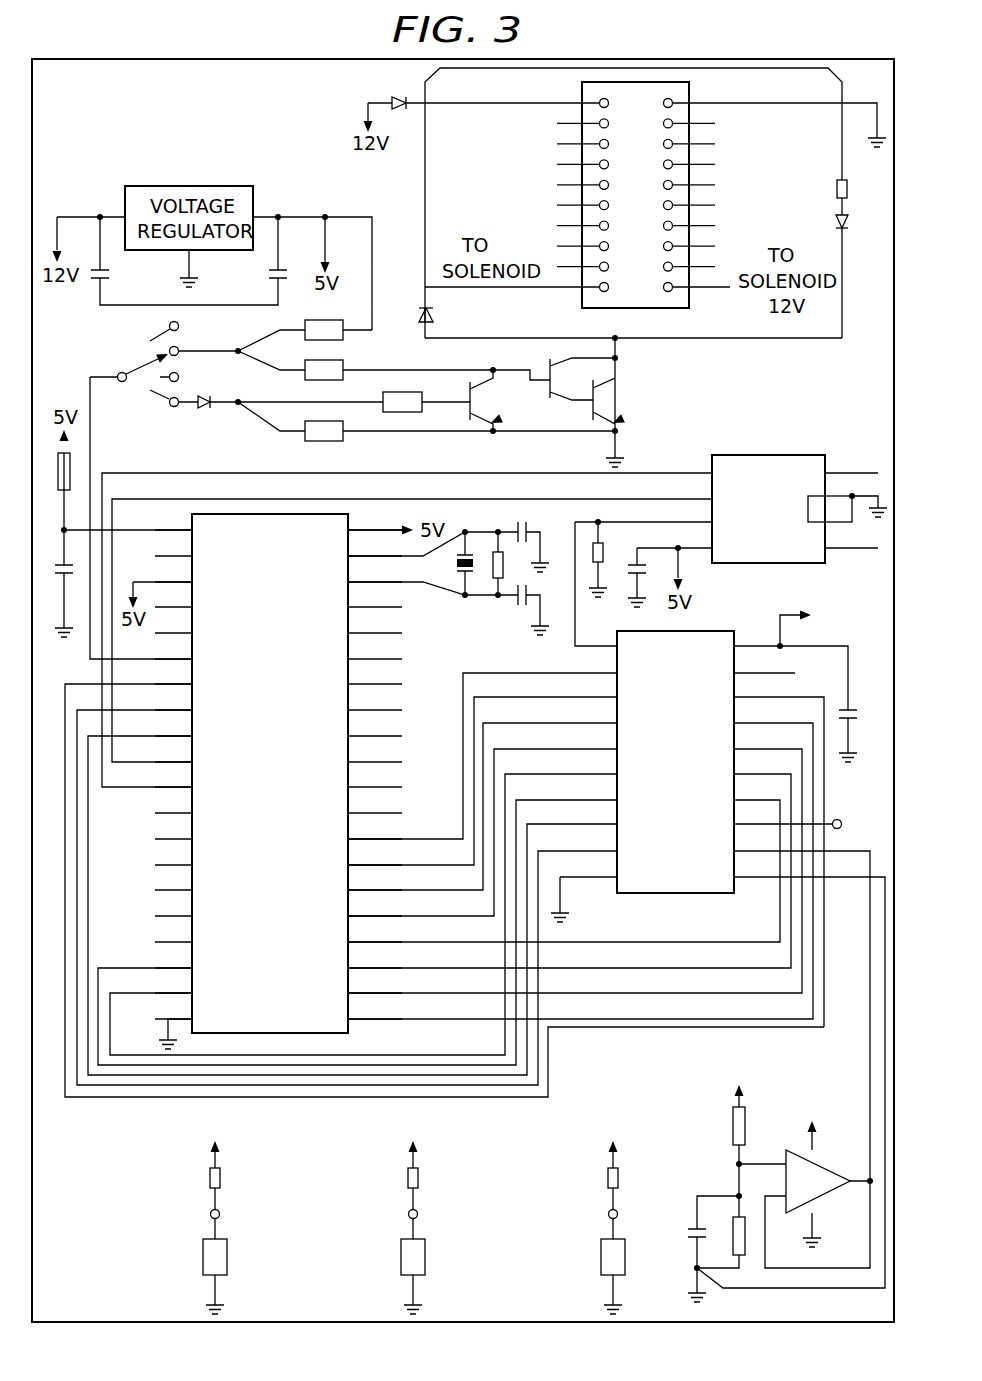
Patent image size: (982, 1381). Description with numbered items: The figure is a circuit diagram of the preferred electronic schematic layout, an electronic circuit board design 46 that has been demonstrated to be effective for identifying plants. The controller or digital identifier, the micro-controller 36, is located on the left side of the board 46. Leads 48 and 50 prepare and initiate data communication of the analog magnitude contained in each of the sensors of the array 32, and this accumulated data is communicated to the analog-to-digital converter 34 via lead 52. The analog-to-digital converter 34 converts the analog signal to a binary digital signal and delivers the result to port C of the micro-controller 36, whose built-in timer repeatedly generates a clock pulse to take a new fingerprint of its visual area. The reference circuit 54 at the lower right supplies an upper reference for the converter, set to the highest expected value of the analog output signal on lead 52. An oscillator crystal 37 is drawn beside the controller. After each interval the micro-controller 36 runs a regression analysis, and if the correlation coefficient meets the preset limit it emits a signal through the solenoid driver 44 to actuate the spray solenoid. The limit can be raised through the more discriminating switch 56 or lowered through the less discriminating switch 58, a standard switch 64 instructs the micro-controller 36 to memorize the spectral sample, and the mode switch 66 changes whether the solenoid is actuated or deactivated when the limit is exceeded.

The electronic circuit board design 46 is at (224, 51).
The sensor array 32 is at (582, 299).
The mode switch 66 is at (113, 350).
The lead 50 is at (135, 498).
The lead 48 is at (170, 474).
The solenoid driver 44 is at (640, 398).
The micro-controller 36 is at (352, 1030).
The oscillator crystal 37 is at (462, 621).
The lead 52 is at (552, 633).
The analog-to-digital converter 34 is at (727, 632).
The more discriminating switch 56 is at (182, 1205).
The less discriminating switch 58 is at (382, 1205).
The standard switch 64 is at (580, 1202).
The reference circuit 54 is at (700, 1142).